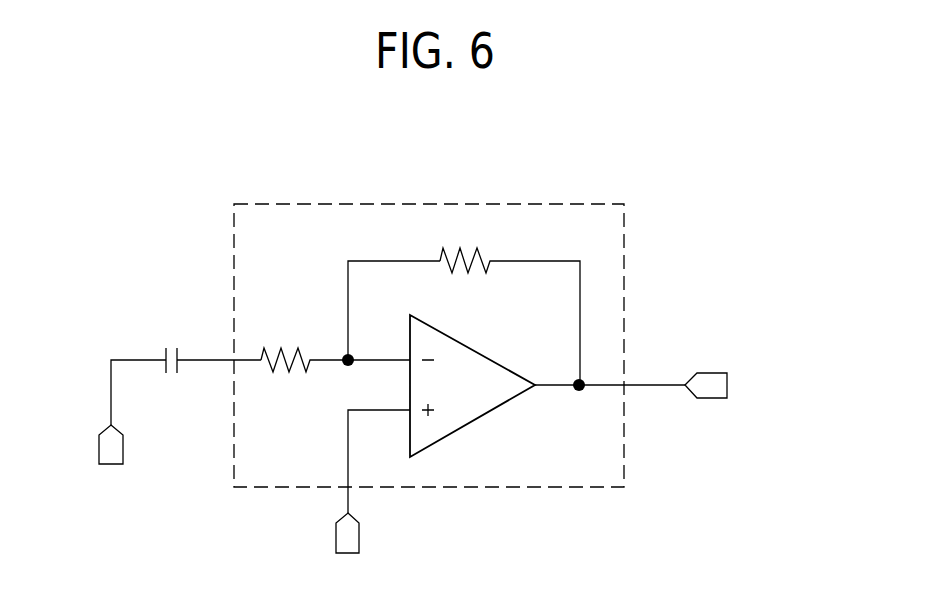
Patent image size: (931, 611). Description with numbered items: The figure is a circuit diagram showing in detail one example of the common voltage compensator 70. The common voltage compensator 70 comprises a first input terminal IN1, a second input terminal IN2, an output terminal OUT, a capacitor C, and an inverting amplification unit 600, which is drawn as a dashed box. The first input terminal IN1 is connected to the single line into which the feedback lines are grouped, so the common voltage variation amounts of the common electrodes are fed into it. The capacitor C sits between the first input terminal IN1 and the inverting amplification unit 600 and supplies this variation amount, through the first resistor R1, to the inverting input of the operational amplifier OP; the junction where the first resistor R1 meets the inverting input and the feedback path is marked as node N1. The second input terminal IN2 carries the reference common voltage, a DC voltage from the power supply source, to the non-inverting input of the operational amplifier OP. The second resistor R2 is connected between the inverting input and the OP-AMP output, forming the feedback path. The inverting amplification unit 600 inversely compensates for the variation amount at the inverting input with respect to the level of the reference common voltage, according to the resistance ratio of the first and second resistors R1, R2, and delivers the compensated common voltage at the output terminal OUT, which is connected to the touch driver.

The common voltage compensator 70 is at (601, 176).
The inverting amplification unit 600 is at (626, 288).
The first input terminal IN1 is at (131, 425).
The second input terminal IN2 is at (371, 495).
The capacitor C is at (211, 346).
The first resistor R1 is at (304, 347).
The second resistor R2 is at (464, 304).
The first node N1 is at (373, 371).
The operational amplifier OP is at (493, 413).
The output terminal OUT is at (656, 385).